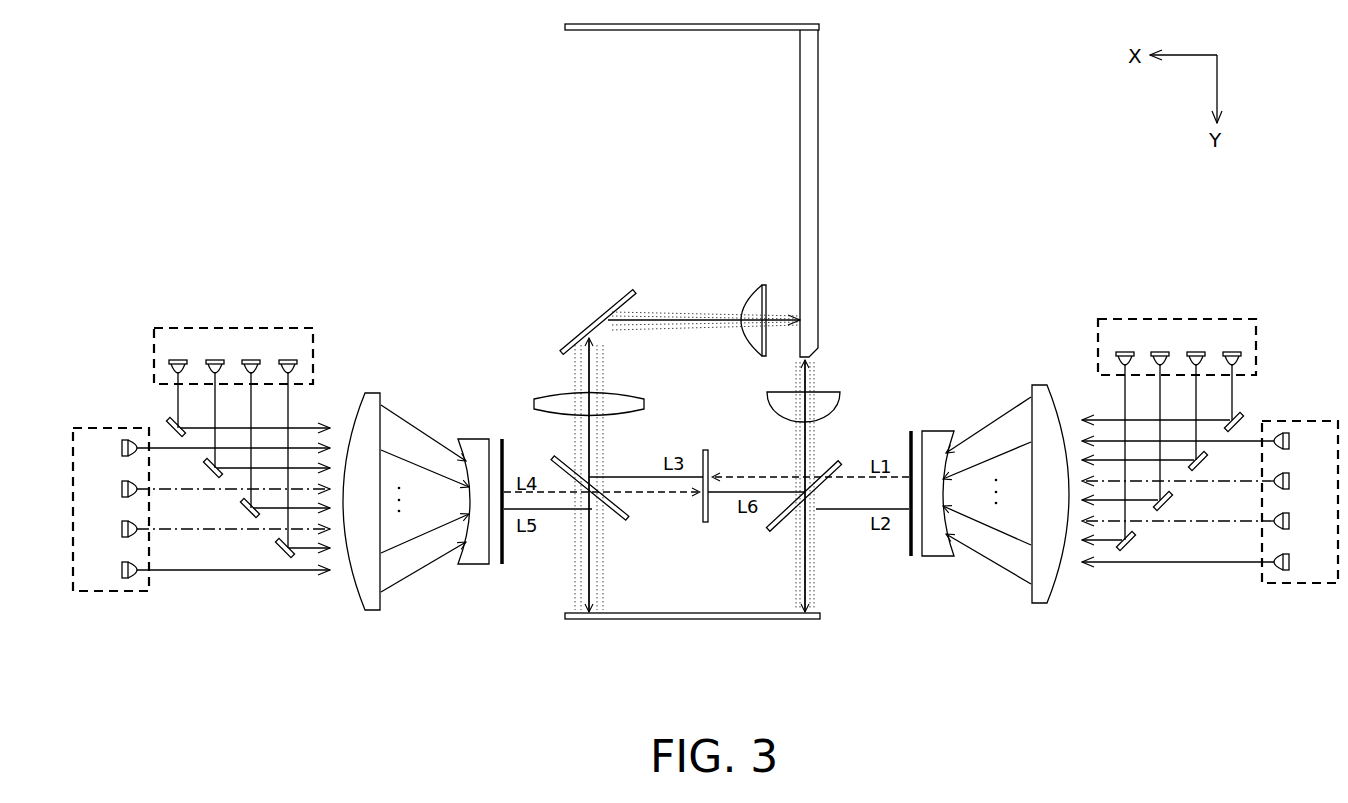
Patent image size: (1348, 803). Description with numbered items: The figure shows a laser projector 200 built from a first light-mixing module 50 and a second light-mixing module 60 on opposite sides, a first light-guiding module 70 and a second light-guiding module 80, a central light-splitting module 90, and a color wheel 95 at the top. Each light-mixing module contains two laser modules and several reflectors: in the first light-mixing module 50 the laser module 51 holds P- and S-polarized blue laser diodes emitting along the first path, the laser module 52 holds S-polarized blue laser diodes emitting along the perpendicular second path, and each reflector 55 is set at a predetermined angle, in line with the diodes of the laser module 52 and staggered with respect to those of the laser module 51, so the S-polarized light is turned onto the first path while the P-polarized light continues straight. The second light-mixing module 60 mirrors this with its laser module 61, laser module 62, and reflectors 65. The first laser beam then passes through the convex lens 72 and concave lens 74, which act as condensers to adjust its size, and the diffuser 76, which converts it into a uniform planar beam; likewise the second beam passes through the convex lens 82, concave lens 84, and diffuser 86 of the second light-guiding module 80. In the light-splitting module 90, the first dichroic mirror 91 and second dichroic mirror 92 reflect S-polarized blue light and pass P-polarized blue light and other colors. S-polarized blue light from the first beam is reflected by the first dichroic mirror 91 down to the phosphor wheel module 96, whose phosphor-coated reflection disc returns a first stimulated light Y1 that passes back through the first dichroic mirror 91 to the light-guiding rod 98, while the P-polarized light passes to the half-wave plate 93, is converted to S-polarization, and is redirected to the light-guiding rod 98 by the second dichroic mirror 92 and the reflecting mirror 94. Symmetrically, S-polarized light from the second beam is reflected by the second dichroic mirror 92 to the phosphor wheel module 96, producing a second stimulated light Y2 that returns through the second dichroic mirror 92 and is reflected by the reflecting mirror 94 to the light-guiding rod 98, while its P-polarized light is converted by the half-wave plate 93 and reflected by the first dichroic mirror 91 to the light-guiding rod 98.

The laser projector 200 is at (365, 128).
The first light-mixing module 50 is at (1347, 280).
The laser module 51 is at (1310, 420).
The laser module 52 is at (1257, 347).
The reflector 55 is at (1241, 414).
The second light-mixing module 60 is at (163, 283).
The laser module 61 is at (98, 427).
The laser module 62 is at (154, 357).
The reflector 65 is at (169, 424).
The first light-guiding module 70 is at (1040, 674).
The convex lens 72 is at (1036, 603).
The concave lens 74 is at (938, 557).
The diffuser 76 is at (911, 557).
The second light-guiding module 80 is at (485, 674).
The convex lens 82 is at (376, 611).
The concave lens 84 is at (474, 565).
The diffuser 86 is at (503, 565).
The light-splitting module 90 is at (820, 630).
The first dichroic mirror 91 is at (770, 531).
The second dichroic mirror 92 is at (626, 520).
The half-wave plate 93 is at (703, 523).
The reflecting mirror 94 is at (608, 306).
The color wheel 95 is at (678, 31).
The phosphor wheel module 96 is at (707, 613).
The light-guiding rod 98 is at (800, 172).
The first stimulated light Y1 is at (808, 450).
The second stimulated light Y2 is at (605, 372).